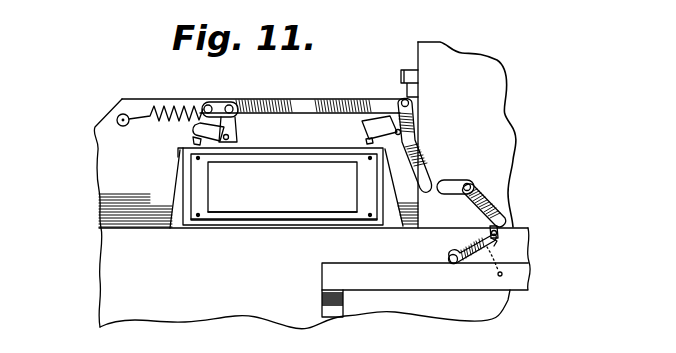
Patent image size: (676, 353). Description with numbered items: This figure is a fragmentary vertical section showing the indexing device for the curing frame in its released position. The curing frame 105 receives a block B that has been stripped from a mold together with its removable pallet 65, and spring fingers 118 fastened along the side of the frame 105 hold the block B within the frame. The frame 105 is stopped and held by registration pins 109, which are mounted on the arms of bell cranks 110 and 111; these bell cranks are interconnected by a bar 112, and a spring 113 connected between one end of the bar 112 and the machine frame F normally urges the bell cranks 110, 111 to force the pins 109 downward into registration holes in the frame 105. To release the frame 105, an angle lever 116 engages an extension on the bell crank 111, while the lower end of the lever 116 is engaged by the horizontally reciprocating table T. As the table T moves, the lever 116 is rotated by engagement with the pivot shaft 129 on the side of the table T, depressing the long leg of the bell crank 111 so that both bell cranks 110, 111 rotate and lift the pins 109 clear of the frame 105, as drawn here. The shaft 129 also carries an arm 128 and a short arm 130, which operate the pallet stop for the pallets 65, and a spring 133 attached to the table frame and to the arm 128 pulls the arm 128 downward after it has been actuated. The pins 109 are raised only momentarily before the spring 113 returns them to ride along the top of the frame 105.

The pallet 65 is at (312, 225).
The curing frame 105 is at (253, 188).
The registration pins 109 is at (192, 142).
The bell crank 110 is at (237, 124).
The bell crank 111 is at (409, 151).
The bar 112 is at (307, 103).
The spring 113 is at (168, 104).
The lever 116 is at (478, 191).
The spring fingers 118 is at (232, 226).
The arm 128 is at (458, 254).
The pivot shaft 129 is at (497, 235).
The short arm 130 is at (503, 243).
The spring 133 is at (497, 262).
The block B is at (282, 187).
The frame F is at (98, 272).
The table T is at (320, 289).